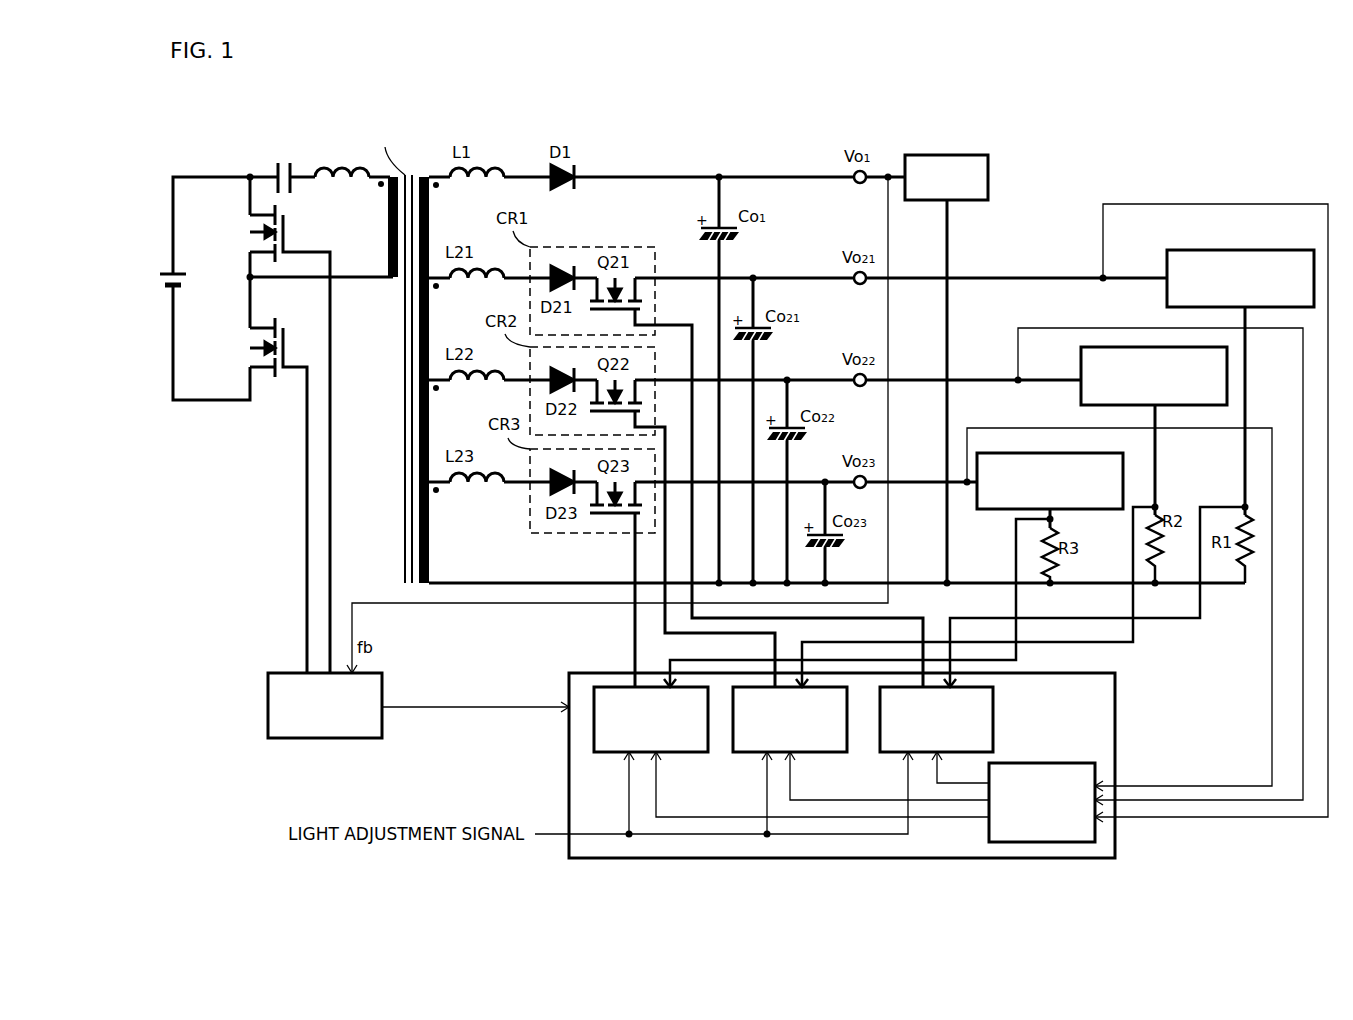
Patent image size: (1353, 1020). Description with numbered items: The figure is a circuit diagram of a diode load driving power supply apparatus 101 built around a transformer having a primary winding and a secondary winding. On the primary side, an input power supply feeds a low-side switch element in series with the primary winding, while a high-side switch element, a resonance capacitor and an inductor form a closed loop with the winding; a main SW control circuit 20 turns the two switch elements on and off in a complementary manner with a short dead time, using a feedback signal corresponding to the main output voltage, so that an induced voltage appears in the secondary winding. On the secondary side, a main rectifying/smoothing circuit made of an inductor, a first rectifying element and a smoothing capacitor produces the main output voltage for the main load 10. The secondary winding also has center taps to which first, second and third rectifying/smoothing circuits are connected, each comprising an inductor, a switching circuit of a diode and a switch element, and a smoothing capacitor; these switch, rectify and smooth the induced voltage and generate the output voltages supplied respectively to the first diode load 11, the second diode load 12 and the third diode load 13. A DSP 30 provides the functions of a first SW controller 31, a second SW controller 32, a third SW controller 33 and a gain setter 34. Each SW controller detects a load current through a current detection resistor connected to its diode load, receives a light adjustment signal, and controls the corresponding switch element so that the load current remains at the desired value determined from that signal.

The diode load driving power supply apparatus 101 is at (190, 154).
The main load 10 is at (987, 156).
The first diode load 11 is at (1294, 250).
The second diode load 12 is at (1081, 393).
The third diode load 13 is at (1093, 510).
The main SW control circuit 20 is at (382, 682).
The DSP 30 is at (1115, 690).
The first SW controller 31 is at (887, 753).
The second SW controller 32 is at (748, 753).
The third SW controller 33 is at (614, 753).
The gain setter 34 is at (1038, 763).